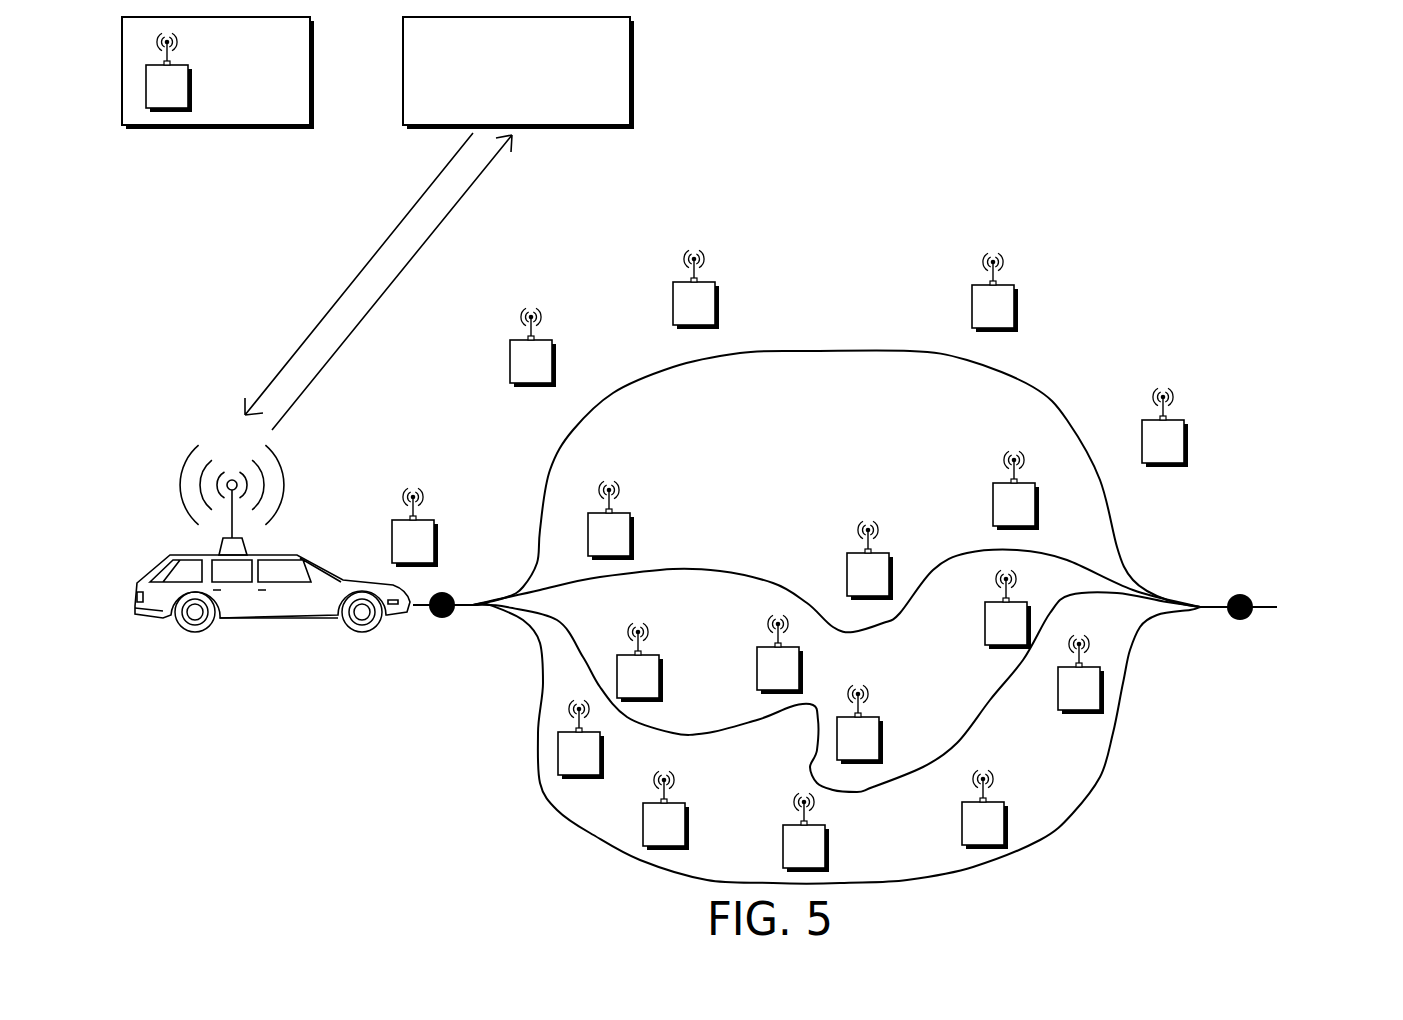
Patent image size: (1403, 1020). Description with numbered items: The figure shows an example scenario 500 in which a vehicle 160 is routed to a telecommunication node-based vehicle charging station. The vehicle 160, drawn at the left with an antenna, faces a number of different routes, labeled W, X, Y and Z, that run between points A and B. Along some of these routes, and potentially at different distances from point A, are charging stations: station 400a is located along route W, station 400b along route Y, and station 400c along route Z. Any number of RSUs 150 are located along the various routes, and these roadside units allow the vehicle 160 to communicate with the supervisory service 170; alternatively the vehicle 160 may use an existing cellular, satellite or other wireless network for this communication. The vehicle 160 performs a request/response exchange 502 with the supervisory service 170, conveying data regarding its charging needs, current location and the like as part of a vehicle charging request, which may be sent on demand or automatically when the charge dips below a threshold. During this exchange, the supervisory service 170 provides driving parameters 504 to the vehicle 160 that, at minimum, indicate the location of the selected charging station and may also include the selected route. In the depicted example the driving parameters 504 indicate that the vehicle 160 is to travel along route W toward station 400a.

The RSU 150 is at (235, 99).
The supervisory service 170 is at (534, 112).
The vehicle 160 is at (247, 625).
The driving parameter negotiation system 500 is at (1313, 88).
The request/response exchange 502 is at (303, 274).
The driving parameters 504 is at (392, 290).
The telecommunication node-based vehicle charging station 400a is at (815, 302).
The telecommunication node-based vehicle charging station 400b is at (966, 691).
The telecommunication node-based vehicle charging station 400c is at (1197, 757).